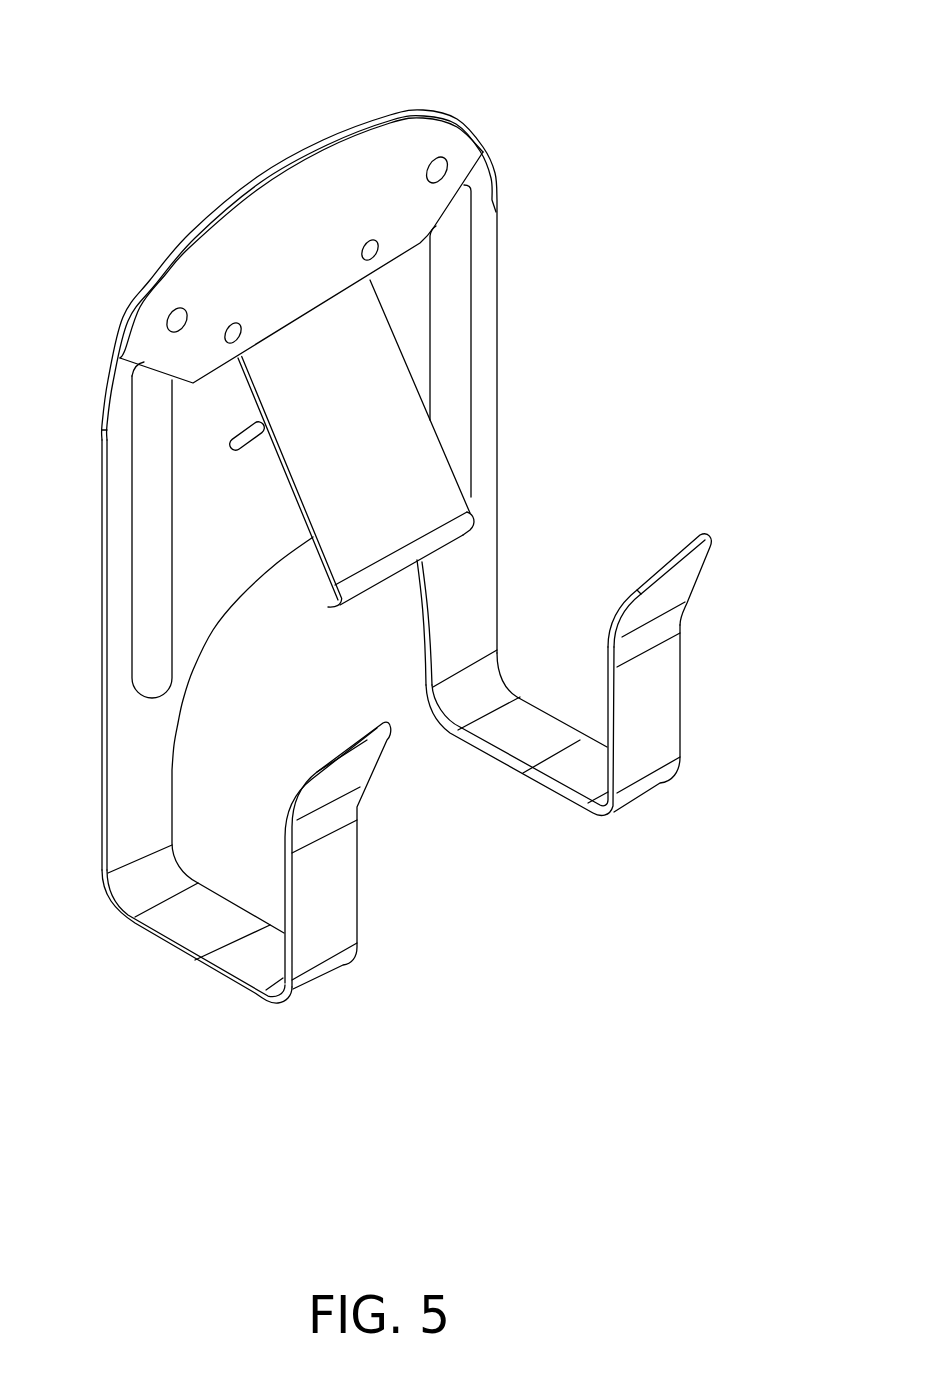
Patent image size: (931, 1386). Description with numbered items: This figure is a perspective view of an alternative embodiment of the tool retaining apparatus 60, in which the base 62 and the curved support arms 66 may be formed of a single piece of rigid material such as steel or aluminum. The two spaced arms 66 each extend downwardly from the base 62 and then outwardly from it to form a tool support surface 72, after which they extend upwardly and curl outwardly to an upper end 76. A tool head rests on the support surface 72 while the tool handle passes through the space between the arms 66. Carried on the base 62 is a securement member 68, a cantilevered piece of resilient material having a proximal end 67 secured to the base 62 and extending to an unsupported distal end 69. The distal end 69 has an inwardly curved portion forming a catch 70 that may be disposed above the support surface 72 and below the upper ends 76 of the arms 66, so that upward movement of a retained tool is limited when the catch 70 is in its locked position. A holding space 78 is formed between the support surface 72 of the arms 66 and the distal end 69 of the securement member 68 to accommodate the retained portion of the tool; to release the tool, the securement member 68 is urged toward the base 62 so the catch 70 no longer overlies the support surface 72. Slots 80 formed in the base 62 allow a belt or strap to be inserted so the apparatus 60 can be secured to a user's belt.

The tool retaining apparatus 60 is at (495, 84).
The base 62 is at (155, 778).
The curved support arms 66 is at (647, 783).
The proximal end 67 is at (233, 453).
The securement member 68 is at (363, 440).
The distal end 69 is at (370, 583).
The catch 70 is at (470, 522).
The tool support surface 72 is at (192, 938).
The upper end 76 is at (710, 543).
The holding space 78 is at (428, 815).
The slots 80 is at (160, 660).